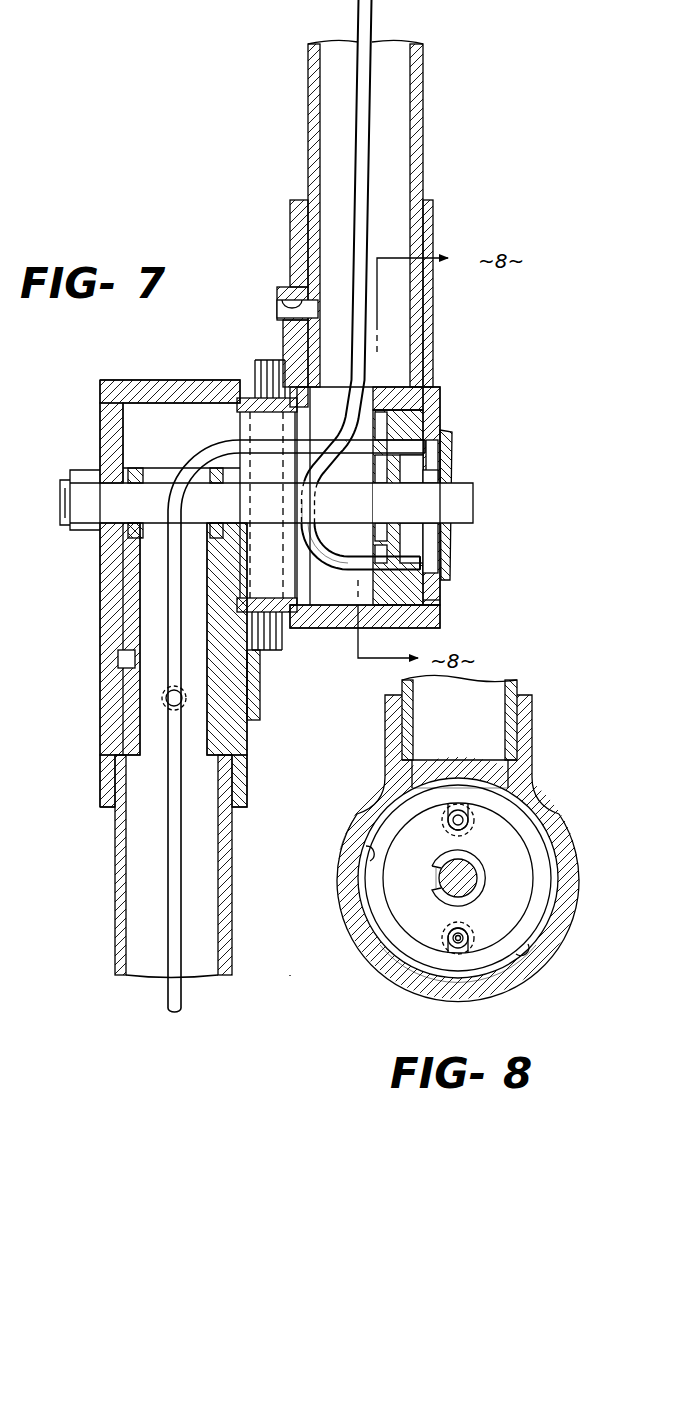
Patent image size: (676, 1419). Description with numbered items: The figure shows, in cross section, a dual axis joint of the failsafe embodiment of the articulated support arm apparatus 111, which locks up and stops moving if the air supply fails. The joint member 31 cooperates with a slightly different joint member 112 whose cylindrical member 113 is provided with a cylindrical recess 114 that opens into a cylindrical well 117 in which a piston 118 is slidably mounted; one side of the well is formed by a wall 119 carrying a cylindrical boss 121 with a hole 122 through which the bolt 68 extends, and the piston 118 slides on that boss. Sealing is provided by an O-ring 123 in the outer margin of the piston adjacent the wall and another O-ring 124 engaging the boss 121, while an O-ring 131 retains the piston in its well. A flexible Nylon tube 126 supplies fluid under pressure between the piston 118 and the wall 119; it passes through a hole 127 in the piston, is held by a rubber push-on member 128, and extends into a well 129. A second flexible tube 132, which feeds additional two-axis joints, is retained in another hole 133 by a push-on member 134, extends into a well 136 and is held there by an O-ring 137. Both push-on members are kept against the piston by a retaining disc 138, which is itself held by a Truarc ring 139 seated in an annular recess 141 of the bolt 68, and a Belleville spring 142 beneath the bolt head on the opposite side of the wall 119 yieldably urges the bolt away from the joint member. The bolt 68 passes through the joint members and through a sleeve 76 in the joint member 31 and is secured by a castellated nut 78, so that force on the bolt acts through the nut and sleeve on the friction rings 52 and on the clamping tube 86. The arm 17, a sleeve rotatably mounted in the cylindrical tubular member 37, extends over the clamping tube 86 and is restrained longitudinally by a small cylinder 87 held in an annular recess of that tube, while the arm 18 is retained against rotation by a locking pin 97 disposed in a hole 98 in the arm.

In FIG. 7, the arm 17 is at (115, 935).
In FIG. 7, the arm 18 is at (308, 128).
In FIG. 8, the arm 18 is at (517, 698).
In FIG. 7, the joint member 31 is at (75, 600).
In FIG. 7, the cylindrical tubular member 37 is at (100, 770).
In FIG. 7, the friction rings 52 is at (258, 375).
In FIG. 7, the bolt 68 is at (275, 530).
In FIG. 8, the bolt 68 is at (442, 892).
In FIG. 7, the sleeve 76 is at (100, 470).
In FIG. 7, the castellated nut 78 is at (92, 532).
In FIG. 7, the clamping tube 86 is at (135, 468).
In FIG. 7, the small cylinder 87 is at (118, 660).
In FIG. 7, the locking pin 97 is at (283, 322).
In FIG. 7, the hole 98 is at (303, 305).
In FIG. 7, the articulated support arm apparatus 111 is at (250, 888).
In FIG. 7, the joint member 112 is at (448, 622).
In FIG. 8, the joint member 112 is at (572, 935).
In FIG. 7, the cylindrical member 113 is at (310, 628).
In FIG. 8, the cylindrical member 113 is at (377, 985).
In FIG. 7, the cylindrical recess 114 is at (345, 628).
In FIG. 8, the cylindrical recess 114 is at (352, 863).
In FIG. 7, the cylindrical well 117 is at (432, 628).
In FIG. 8, the cylindrical well 117 is at (515, 944).
In FIG. 7, the piston 118 is at (438, 590).
In FIG. 8, the piston 118 is at (548, 897).
In FIG. 7, the wall 119 is at (445, 560).
In FIG. 7, the cylindrical boss 121 is at (438, 478).
In FIG. 7, the hole 122 is at (475, 500).
In FIG. 7, the O-ring 123 is at (440, 420).
In FIG. 7, the O-ring 124 is at (440, 538).
In FIG. 7, the flexible tube 126 is at (373, 38).
In FIG. 8, the flexible tube 126 is at (465, 945).
In FIG. 7, the hole 127 is at (368, 615).
In FIG. 7, the push-on member 128 is at (369, 575).
In FIG. 8, the push-on member 128 is at (455, 953).
In FIG. 7, the well 129 is at (440, 572).
In FIG. 7, the O-ring 131 is at (425, 605).
In FIG. 7, the flexible tube 132 is at (167, 838).
In FIG. 8, the flexible tube 132 is at (462, 808).
In FIG. 7, the hole 133 is at (410, 440).
In FIG. 7, the push-on member 134 is at (400, 412).
In FIG. 8, the push-on member 134 is at (454, 812).
In FIG. 7, the well 136 is at (442, 450).
In FIG. 7, the O-ring 137 is at (428, 445).
In FIG. 7, the retaining disc 138 is at (375, 540).
In FIG. 8, the retaining disc 138 is at (525, 875).
In FIG. 7, the Truarc ring 139 is at (338, 440).
In FIG. 8, the Truarc ring 139 is at (475, 860).
In FIG. 7, the annular recess 141 is at (360, 483).
In FIG. 7, the Belleville spring 142 is at (452, 460).